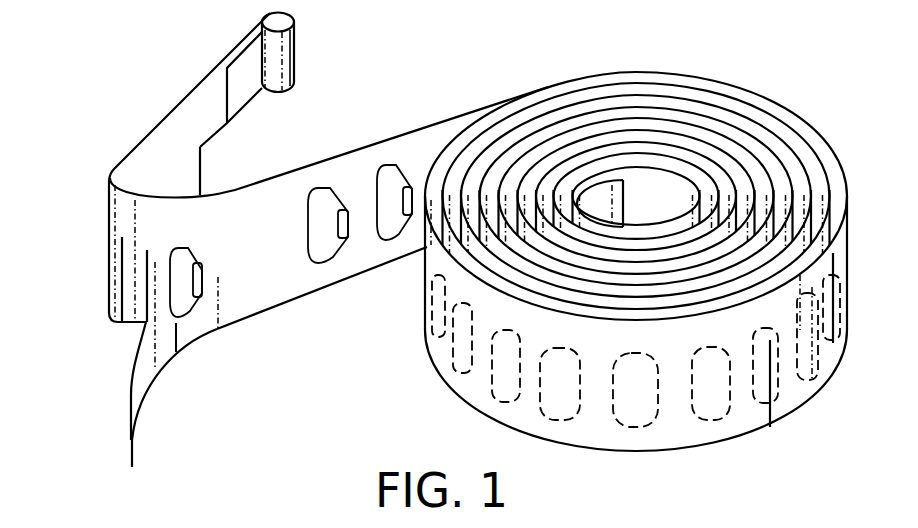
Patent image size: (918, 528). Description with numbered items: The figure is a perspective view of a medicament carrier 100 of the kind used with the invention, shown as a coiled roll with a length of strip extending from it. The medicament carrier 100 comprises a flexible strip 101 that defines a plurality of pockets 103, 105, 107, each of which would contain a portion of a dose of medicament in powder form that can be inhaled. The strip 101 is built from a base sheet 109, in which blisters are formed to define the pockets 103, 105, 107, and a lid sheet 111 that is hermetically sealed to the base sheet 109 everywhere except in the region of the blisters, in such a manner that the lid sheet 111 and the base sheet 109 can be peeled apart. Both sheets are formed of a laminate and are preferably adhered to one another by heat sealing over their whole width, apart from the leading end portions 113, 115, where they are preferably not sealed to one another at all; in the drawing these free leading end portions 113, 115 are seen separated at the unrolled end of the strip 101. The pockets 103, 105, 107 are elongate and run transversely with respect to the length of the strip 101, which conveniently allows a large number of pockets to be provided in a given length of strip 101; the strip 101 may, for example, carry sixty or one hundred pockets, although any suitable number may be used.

The medicament carrier 100 is at (762, 101).
The flexible strip 101 is at (470, 400).
The pocket 103 is at (644, 412).
The pocket 105 is at (723, 412).
The pocket 107 is at (777, 390).
The base sheet 109 is at (188, 336).
The lid sheet 111 is at (118, 258).
The leading end portion 113 is at (132, 413).
The leading end portion 115 is at (296, 50).